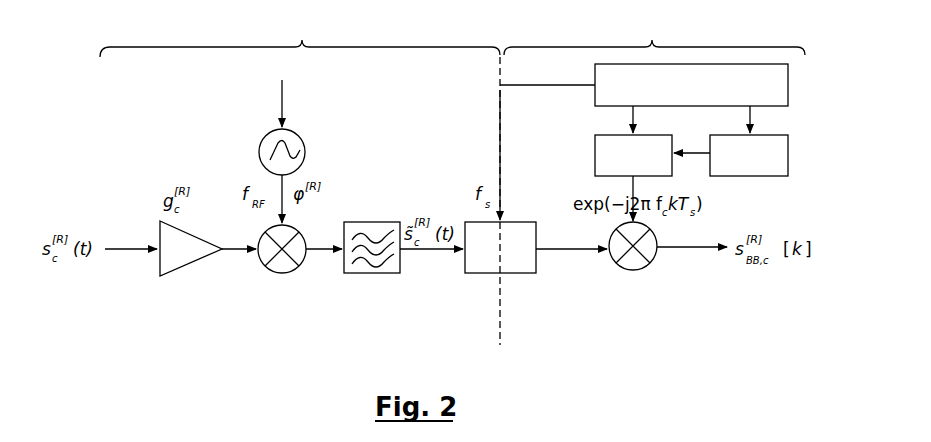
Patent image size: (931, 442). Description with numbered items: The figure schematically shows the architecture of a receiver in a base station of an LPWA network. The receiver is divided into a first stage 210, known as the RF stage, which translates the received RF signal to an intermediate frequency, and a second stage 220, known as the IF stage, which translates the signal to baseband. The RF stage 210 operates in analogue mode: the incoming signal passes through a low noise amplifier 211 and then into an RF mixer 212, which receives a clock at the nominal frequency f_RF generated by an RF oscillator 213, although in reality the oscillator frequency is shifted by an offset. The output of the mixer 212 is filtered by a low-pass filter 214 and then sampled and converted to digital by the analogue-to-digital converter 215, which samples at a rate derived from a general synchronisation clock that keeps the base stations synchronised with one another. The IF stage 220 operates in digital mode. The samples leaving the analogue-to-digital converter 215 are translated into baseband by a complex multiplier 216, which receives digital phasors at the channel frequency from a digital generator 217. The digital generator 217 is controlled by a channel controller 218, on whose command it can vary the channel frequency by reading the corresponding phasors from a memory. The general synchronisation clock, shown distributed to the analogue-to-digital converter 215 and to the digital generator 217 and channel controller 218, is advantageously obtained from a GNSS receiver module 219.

The first stage (RF stage) 210 is at (300, 33).
The second stage (IF stage) 220 is at (654, 32).
The low noise amplifier 211 is at (178, 270).
The RF mixer 212 is at (285, 273).
The RF oscillator 213 is at (295, 130).
The low-pass filter 214 is at (375, 273).
The analogue-to-digital converter 215 is at (515, 273).
The complex multiplier 216 is at (645, 268).
The digital generator 217 is at (595, 150).
The channel controller 218 is at (790, 163).
The GNSS receiver module 219 is at (790, 92).